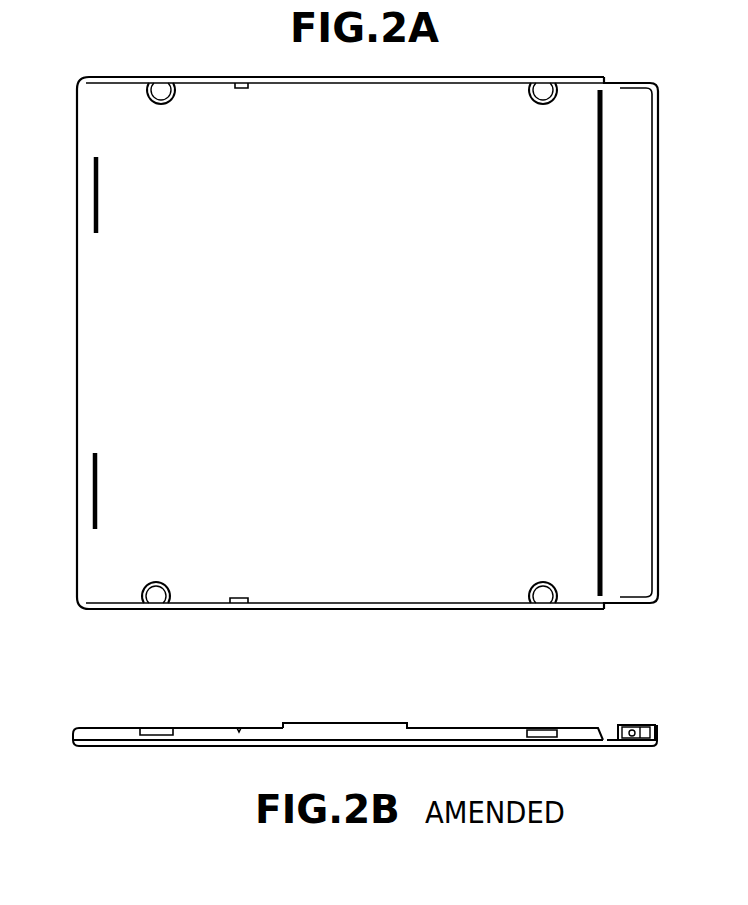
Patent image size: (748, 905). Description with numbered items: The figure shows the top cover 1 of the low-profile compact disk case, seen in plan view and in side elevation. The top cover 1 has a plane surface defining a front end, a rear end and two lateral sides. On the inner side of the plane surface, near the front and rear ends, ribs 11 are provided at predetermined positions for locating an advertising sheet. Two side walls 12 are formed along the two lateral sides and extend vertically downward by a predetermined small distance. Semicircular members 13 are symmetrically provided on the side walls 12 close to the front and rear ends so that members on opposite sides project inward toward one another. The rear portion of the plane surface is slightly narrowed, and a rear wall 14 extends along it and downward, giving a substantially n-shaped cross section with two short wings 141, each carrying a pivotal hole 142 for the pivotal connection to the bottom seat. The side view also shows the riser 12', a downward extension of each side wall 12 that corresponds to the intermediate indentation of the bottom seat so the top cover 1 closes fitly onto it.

In FIG. 2A, the top cover 1 is at (93, 293).
In FIG. 2A, the ribs 11 is at (94, 187).
In FIG. 2A, the side walls 12 is at (223, 303).
In FIG. 2A, the semicircular members 13 is at (161, 95).
In FIG. 2A, the rear wall 14 is at (653, 505).
In FIG. 2B, the riser 12' is at (365, 706).
In FIG. 2B, the short wings 141 is at (646, 727).
In FIG. 2B, the pivotal hole 142 is at (621, 727).